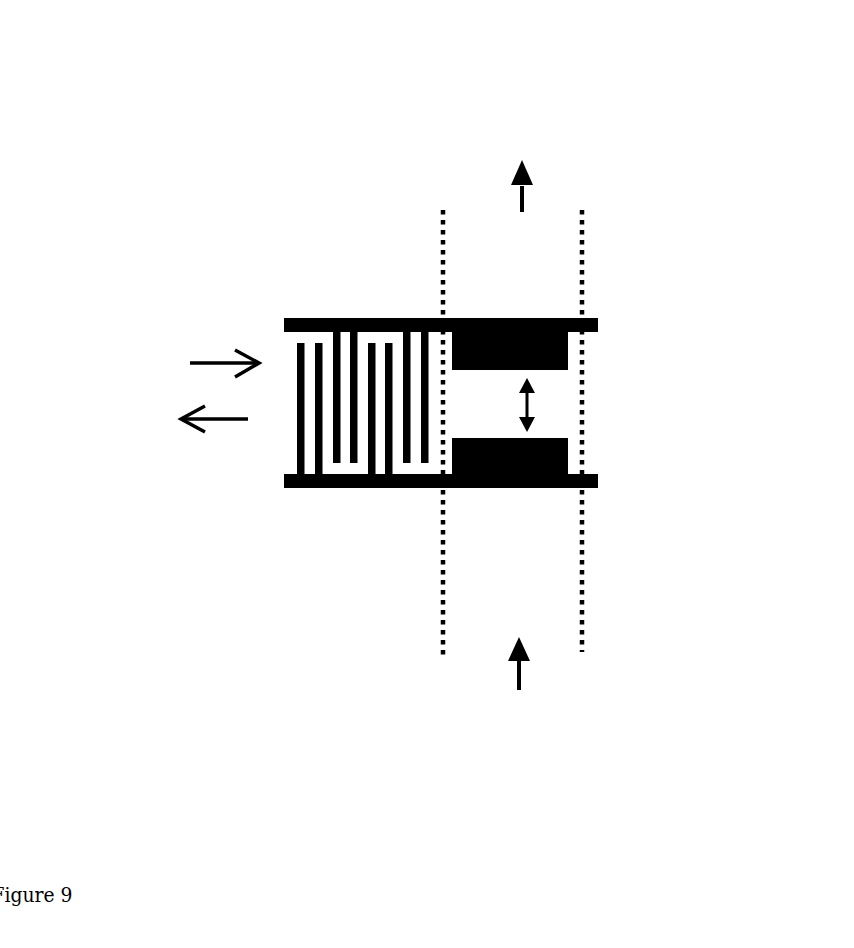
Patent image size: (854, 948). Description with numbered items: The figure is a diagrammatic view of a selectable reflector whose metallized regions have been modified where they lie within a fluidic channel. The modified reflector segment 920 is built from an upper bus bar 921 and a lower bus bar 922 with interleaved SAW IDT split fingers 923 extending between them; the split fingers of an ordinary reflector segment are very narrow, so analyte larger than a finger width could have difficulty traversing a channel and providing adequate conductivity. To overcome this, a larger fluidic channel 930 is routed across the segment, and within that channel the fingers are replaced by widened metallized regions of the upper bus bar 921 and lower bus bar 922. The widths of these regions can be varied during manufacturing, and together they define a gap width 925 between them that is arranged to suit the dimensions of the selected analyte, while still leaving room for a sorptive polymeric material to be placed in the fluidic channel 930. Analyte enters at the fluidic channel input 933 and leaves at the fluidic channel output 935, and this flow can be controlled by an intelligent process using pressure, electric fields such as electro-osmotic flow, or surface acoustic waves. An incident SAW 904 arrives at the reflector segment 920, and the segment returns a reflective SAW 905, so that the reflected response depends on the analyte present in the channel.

The incident SAW 904 is at (216, 302).
The reflective SAW 905 is at (218, 465).
The modified reflector segment 920 is at (329, 288).
The upper bus bar 921 is at (621, 293).
The lower bus bar 922 is at (636, 483).
The SAW IDT split fingers 923 is at (353, 517).
The gap width 925 is at (569, 396).
The fluidic channel 930 is at (620, 564).
The fluidic channel input 933 is at (520, 722).
The fluidic channel output 935 is at (526, 129).